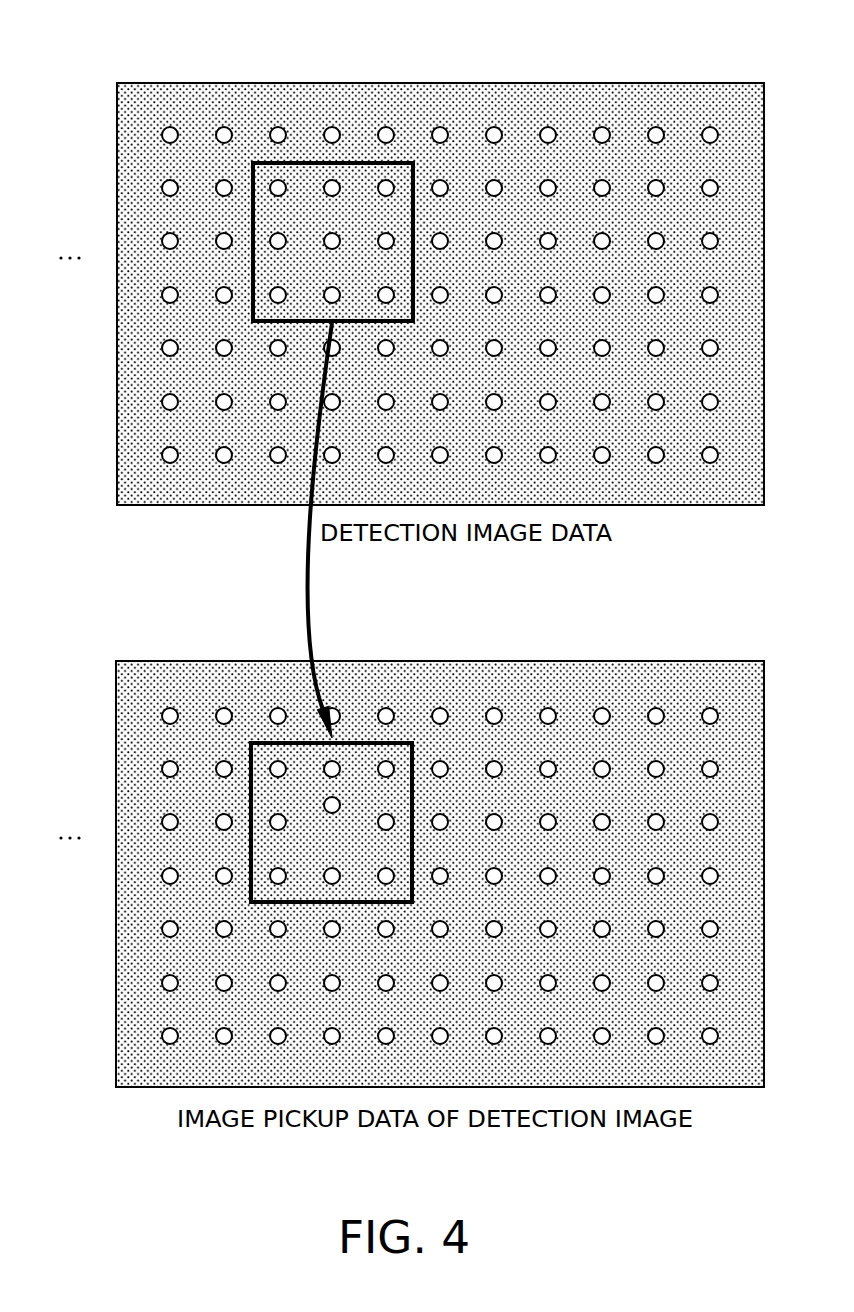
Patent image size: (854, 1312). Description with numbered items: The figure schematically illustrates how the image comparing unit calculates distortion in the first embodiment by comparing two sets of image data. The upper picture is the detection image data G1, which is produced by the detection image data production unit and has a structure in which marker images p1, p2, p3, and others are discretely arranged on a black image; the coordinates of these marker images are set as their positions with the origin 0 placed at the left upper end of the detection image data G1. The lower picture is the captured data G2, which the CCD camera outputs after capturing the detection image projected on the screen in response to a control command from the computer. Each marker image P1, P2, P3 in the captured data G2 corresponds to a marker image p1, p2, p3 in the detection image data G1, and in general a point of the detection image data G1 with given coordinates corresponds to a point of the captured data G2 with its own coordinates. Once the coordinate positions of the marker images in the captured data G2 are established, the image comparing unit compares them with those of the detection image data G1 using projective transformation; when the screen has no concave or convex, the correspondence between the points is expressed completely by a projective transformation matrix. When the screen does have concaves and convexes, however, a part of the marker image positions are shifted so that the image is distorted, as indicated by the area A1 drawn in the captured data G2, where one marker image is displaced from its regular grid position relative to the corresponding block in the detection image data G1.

The detection image data G1 is at (409, 257).
The captured data G2 is at (408, 839).
The area A1 is at (362, 743).
The marker image p1 is at (162, 134).
The marker image p2 is at (162, 187).
The marker image p3 is at (162, 240).
The marker image P1 is at (162, 715).
The marker image P2 is at (162, 768).
The marker image P3 is at (162, 821).
The origin 0 is at (108, 68).